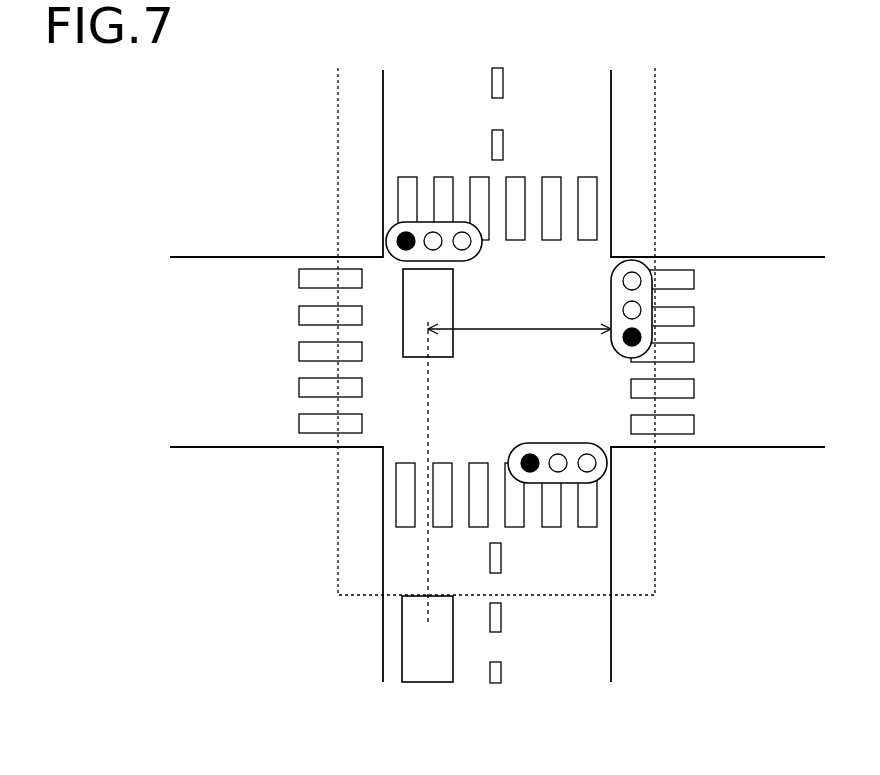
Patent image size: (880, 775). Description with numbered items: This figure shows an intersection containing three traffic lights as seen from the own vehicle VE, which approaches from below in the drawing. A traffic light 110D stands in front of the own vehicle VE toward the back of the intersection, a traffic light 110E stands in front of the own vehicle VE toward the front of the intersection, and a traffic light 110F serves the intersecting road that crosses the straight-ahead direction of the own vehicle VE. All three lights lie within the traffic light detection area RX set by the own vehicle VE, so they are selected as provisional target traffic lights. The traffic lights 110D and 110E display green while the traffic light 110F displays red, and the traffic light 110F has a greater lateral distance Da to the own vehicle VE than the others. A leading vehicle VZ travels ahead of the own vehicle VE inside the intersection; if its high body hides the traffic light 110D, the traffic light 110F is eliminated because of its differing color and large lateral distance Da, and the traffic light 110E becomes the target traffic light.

The traffic light 110D is at (409, 219).
The traffic light 110E is at (584, 486).
The traffic light 110F is at (646, 259).
The traffic light detection area RX is at (659, 103).
The leading vehicle VZ is at (403, 347).
The own vehicle VE is at (402, 630).
The lateral distance Da is at (519, 316).